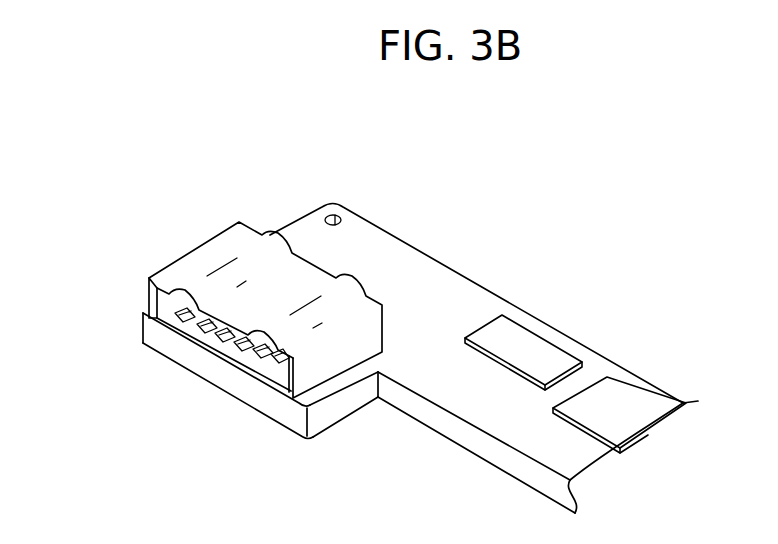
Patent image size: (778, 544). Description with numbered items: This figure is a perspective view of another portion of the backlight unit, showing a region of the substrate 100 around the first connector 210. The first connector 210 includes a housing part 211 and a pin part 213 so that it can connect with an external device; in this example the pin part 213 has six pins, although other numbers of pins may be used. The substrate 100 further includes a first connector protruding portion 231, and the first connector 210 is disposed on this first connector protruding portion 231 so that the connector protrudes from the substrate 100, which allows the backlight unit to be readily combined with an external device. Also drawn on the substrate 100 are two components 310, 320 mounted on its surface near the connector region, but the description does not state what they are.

The substrate 100 is at (365, 232).
The first connector 210 is at (209, 310).
The housing part 211 is at (197, 249).
The pin part 213 is at (183, 296).
The first connector protruding portion 231 is at (327, 391).
The first electronic component 310 is at (533, 343).
The second electronic component 320 is at (623, 400).